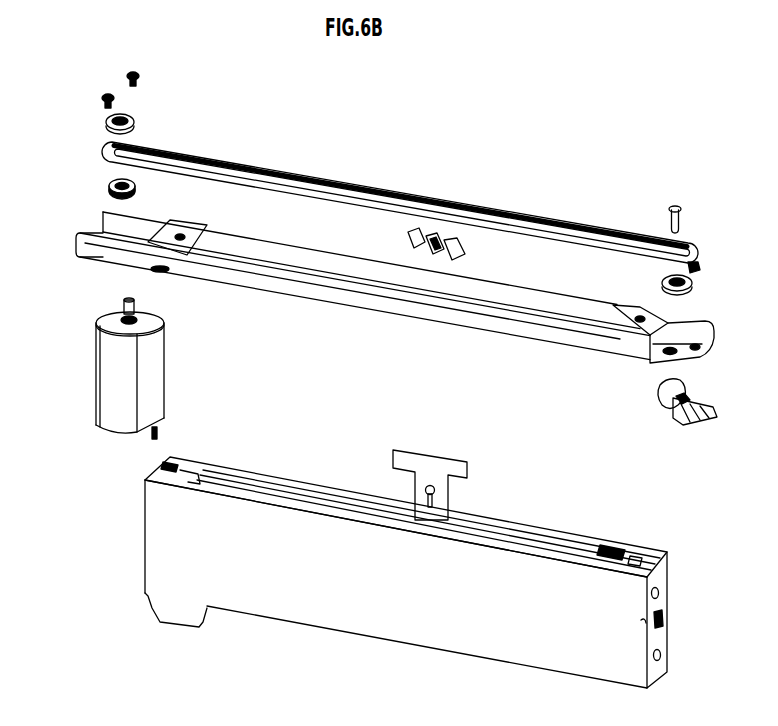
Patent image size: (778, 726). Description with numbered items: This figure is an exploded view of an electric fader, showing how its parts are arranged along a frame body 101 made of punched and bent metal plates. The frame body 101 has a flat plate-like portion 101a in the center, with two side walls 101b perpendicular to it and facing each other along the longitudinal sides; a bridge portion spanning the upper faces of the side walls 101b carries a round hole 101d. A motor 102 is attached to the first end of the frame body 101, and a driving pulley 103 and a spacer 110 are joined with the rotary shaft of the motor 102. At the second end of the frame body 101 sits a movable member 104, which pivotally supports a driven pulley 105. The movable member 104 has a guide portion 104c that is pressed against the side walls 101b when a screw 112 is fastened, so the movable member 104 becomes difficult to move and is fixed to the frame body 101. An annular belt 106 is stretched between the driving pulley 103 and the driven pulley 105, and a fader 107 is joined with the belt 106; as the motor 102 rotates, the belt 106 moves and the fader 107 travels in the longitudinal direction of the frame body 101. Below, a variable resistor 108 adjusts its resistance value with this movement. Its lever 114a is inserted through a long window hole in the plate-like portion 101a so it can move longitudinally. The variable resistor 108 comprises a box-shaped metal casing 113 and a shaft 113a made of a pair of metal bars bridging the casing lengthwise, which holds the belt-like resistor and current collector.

The frame body 101 is at (395, 303).
The plate-like portion 101a is at (467, 294).
The side walls 101b is at (363, 299).
The round hole 101d is at (640, 323).
The motor 102 is at (90, 371).
The driving pulley 103 is at (106, 189).
The movable member 104 is at (689, 424).
The guide portion 104c is at (676, 386).
The driven pulley 105 is at (693, 288).
The belt 106 is at (330, 175).
The fader 107 is at (402, 233).
The variable resistor 108 is at (407, 576).
The spacer 110 is at (110, 120).
The screw 112 is at (703, 262).
The metal casing 113 is at (443, 587).
The shaft 113a is at (665, 592).
The lever 114a is at (437, 470).